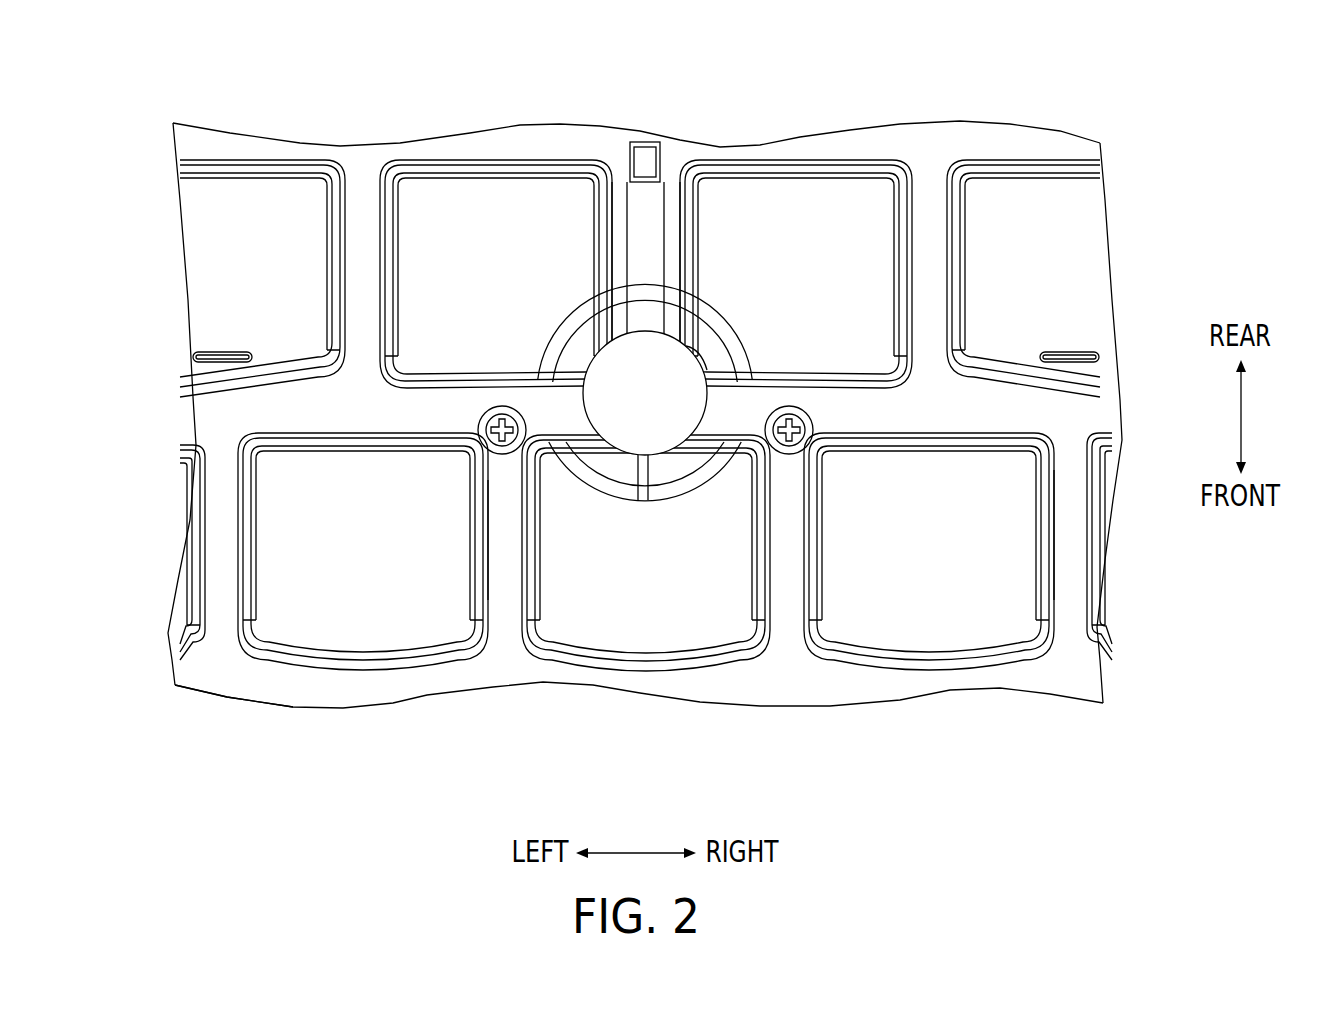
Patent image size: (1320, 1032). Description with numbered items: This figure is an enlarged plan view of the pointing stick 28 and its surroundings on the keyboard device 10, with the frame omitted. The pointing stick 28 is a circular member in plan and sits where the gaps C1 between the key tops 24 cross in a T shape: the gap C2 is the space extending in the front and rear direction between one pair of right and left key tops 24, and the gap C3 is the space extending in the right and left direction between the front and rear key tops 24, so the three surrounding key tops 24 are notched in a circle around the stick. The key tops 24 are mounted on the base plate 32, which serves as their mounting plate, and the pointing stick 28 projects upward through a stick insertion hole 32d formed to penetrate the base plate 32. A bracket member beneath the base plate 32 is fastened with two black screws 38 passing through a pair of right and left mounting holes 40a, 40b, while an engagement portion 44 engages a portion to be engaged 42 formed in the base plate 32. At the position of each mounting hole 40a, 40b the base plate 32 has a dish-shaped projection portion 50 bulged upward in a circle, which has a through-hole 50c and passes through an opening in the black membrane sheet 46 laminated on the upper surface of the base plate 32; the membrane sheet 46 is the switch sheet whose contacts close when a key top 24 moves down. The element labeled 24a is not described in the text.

The keyboard device 10 is at (126, 41).
The key tops 24 is at (243, 208).
The partition wall of holding portion 24a is at (488, 592).
The pointing stick 28 is at (628, 418).
The base plate 32 is at (389, 688).
The stick insertion hole 32d is at (718, 353).
The screws 38 is at (382, 593).
The mounting hole 40a is at (470, 453).
The mounting hole 40b is at (818, 455).
The portion to be engaged 42 is at (640, 162).
The engagement portion 44 is at (684, 107).
The membrane sheet 46 is at (218, 663).
The projection portion 50 is at (605, 424).
The through-hole 50c is at (382, 593).
The gaps C1 is at (553, 407).
The gap C2 is at (647, 228).
The gap C3 is at (578, 424).